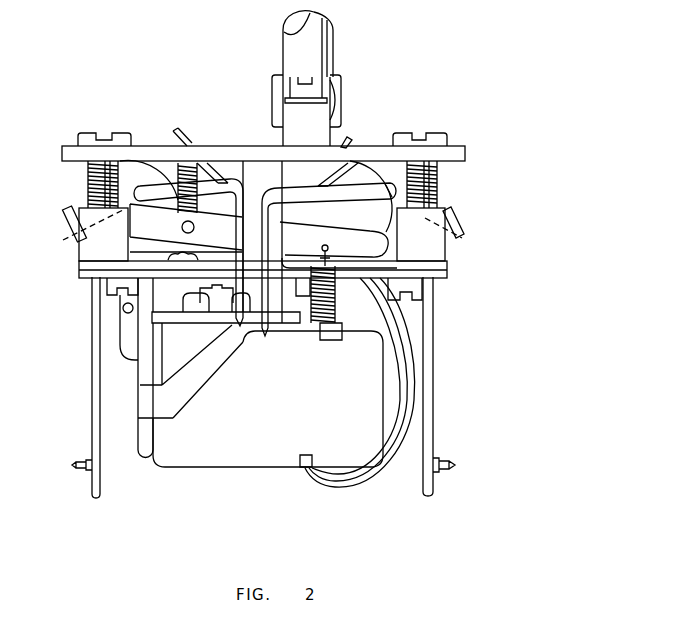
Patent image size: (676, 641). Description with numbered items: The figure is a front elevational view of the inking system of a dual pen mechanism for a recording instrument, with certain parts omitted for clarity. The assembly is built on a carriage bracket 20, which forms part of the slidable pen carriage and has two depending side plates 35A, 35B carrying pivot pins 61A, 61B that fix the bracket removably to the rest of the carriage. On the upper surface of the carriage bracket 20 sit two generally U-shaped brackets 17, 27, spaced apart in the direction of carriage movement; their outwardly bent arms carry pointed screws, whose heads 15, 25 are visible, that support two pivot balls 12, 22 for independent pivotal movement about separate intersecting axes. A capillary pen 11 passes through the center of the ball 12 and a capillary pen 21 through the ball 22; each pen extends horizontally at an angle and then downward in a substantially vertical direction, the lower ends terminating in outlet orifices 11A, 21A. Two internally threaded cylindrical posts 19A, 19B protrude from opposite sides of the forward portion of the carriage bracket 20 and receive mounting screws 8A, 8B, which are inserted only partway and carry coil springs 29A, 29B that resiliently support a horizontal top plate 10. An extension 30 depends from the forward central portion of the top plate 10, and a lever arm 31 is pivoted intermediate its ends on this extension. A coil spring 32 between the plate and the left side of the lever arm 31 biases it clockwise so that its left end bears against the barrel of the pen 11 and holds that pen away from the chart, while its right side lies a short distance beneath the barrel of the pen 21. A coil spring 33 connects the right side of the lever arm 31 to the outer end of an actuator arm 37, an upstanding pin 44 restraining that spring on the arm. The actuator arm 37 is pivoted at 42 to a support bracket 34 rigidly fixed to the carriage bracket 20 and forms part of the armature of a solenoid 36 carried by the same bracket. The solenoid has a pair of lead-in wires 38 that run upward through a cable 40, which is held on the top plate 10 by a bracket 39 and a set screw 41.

The mounting screw 8A is at (92, 135).
The mounting screw 8B is at (437, 135).
The top plate 10 is at (460, 152).
The pivot ball 12 is at (143, 164).
The pivot ball 22 is at (378, 161).
The U-shaped bracket 17 is at (185, 164).
The capillary pen 11 is at (232, 176).
The capillary pen 21 is at (314, 188).
The outlet orifice 11A is at (228, 317).
The outlet orifice 21A is at (268, 334).
The extension 30 is at (257, 186).
The set screw 41 is at (292, 89).
The cable 40 is at (335, 50).
The bracket 39 is at (341, 86).
The U-shaped bracket 27 is at (349, 137).
The coil spring 29A is at (88, 173).
The coil spring 29B is at (438, 182).
The screw head 15 is at (67, 221).
The screw head 25 is at (460, 222).
The cylindrical post 19A is at (85, 252).
The cylindrical post 19B is at (446, 255).
The carriage bracket 20 is at (450, 274).
The lever arm 31 is at (220, 235).
The coil spring 32 is at (183, 224).
The coil spring 33 is at (334, 262).
The upstanding pin 44 is at (322, 336).
The pivot 42 is at (123, 307).
The support bracket 34 is at (170, 316).
The side plate 35A is at (94, 350).
The side plate 35B is at (434, 357).
The pivot pin 61A is at (74, 464).
The pivot pin 61B is at (461, 465).
The solenoid 36 is at (228, 446).
The actuator arm 37 is at (196, 384).
The lead-in wires 38 is at (373, 475).